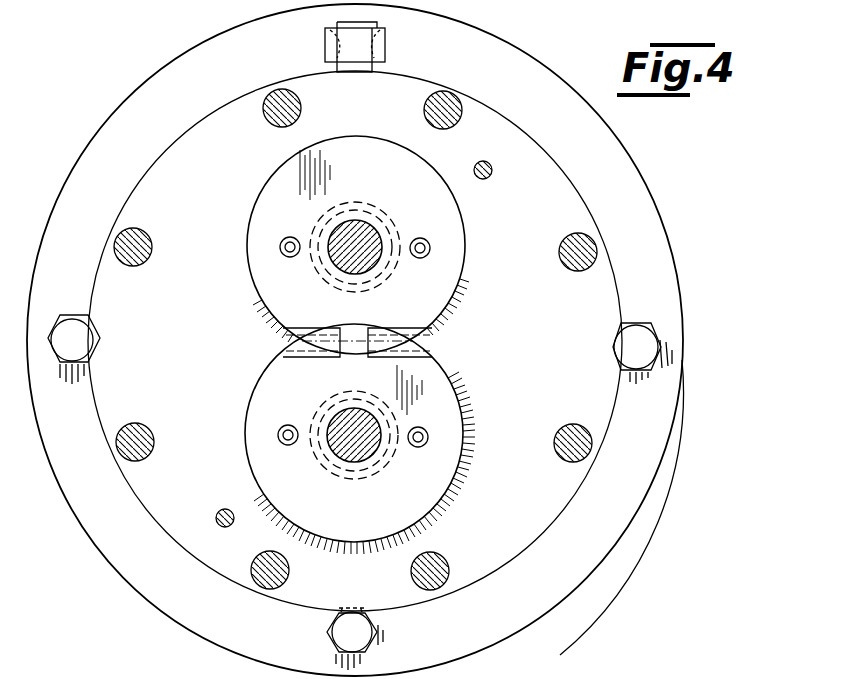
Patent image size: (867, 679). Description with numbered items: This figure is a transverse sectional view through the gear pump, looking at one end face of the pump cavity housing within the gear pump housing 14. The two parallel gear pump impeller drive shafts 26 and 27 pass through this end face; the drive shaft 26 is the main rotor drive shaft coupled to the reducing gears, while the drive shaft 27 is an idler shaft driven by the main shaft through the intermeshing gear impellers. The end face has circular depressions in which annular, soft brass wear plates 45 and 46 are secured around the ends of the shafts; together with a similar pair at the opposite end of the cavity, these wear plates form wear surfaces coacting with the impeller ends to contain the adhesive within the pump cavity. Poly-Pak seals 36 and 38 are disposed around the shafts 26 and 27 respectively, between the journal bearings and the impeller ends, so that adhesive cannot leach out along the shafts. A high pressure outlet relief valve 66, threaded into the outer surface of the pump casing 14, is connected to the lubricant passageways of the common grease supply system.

The gear pump housing 14 is at (121, 88).
The high pressure outlet relief valve 66 is at (326, 43).
The wear plate 45 is at (261, 204).
The wear plate 46 is at (257, 464).
The drive shaft 27 is at (363, 228).
The Poly-Pak seal 38 is at (389, 220).
The drive shaft 26 is at (340, 418).
The Poly-Pak seal 36 is at (330, 470).